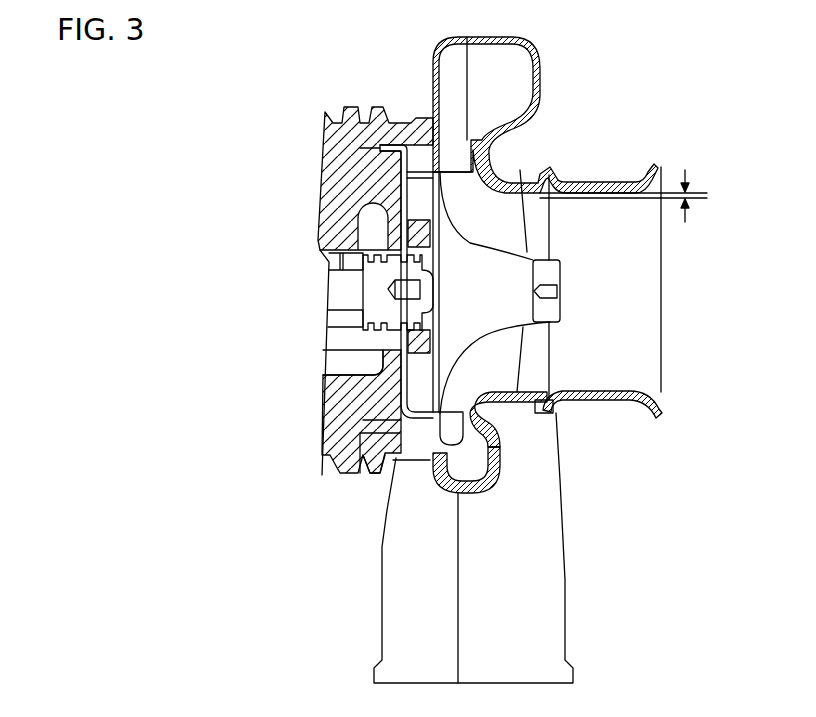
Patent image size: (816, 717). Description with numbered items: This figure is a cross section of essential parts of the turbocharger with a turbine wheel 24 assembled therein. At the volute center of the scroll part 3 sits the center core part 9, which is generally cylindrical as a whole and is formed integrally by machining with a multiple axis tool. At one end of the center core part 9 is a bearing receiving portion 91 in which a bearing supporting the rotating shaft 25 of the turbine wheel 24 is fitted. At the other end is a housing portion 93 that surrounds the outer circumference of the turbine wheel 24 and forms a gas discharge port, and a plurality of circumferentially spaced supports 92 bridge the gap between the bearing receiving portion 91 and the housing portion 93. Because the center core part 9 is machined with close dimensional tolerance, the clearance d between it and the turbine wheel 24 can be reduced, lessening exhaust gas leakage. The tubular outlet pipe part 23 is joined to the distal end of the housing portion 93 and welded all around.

The scroll part 3 is at (378, 583).
The center core part 9 is at (372, 484).
The bearing receiving portion 91 is at (362, 475).
The supports 92 is at (443, 489).
The housing portion 93 is at (510, 400).
The outlet pipe part 23 is at (622, 398).
The turbine wheel 24 is at (497, 348).
The rotating shaft 25 is at (341, 298).